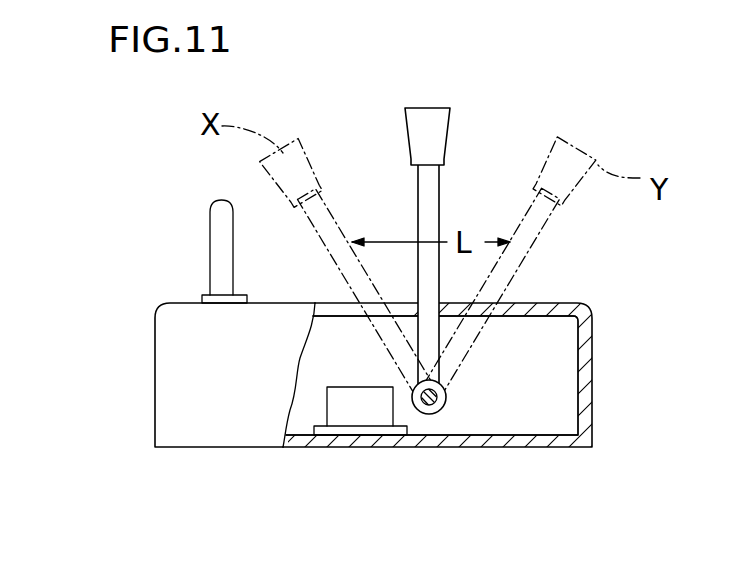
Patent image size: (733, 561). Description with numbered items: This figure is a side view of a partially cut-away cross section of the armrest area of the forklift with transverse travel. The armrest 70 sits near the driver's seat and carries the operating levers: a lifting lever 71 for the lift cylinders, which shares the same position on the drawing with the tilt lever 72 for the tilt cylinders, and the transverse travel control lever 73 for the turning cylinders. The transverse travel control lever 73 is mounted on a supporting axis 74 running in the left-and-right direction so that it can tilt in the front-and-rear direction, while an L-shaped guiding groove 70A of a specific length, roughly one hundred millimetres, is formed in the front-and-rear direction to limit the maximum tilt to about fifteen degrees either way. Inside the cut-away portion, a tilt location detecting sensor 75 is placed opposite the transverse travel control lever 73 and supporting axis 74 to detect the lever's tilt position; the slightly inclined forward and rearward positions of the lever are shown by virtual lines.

The armrest 70 is at (593, 388).
The L-shaped guiding groove 70A is at (497, 322).
The lifting lever 71 is at (134, 251).
The tilt lever 72 is at (221, 213).
The transverse travel control lever 73 is at (440, 114).
The supporting axis 74 is at (429, 413).
The tilt location detecting sensor 75 is at (348, 412).